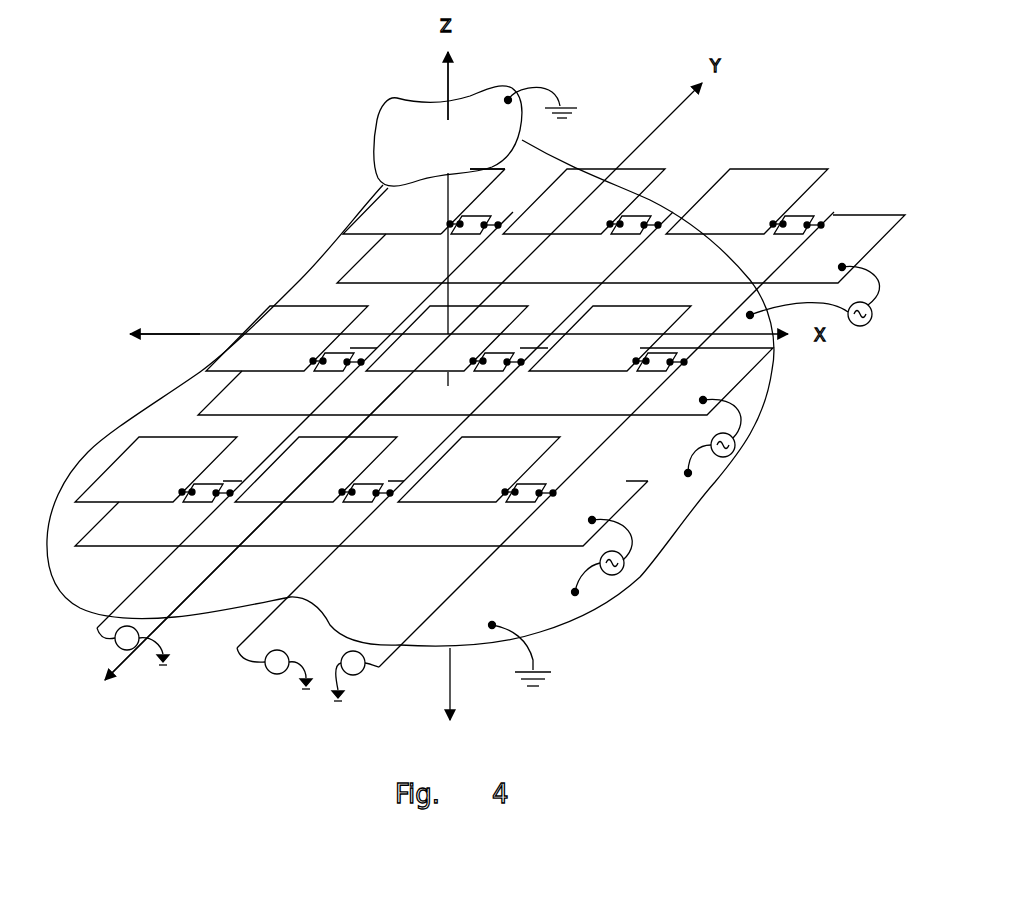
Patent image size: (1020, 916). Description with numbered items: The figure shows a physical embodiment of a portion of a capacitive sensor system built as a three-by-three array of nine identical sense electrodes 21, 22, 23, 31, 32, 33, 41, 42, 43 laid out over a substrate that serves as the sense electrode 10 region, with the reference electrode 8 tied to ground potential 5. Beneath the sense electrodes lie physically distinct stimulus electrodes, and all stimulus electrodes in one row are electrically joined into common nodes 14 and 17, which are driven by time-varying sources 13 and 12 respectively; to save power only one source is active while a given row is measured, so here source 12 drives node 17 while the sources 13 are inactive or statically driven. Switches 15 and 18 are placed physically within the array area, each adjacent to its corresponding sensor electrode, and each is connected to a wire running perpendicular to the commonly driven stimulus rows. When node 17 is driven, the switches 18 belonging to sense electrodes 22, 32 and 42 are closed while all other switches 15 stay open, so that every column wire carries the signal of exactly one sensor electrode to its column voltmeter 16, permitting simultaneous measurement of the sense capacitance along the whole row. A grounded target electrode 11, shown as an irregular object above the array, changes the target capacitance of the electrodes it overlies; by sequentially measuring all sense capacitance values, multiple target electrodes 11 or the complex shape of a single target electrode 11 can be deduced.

The ground potential 5 is at (541, 655).
The reference electrode 8 is at (648, 580).
The sense electrode 10 is at (256, 311).
The target electrode 11 is at (394, 97).
The source 12 is at (728, 461).
The sources 13 is at (870, 327).
The common node 14 is at (347, 267).
The switches 15 is at (810, 210).
The voltmeters 16 is at (114, 645).
The common node 17 is at (196, 416).
The switches 18 is at (639, 372).
The sense electrode 21 is at (156, 469).
The sense electrode 22 is at (287, 338).
The sense electrode 23 is at (424, 201).
The sense electrode 31 is at (316, 469).
The sense electrode 32 is at (447, 338).
The sense electrode 33 is at (584, 201).
The sense electrode 41 is at (479, 469).
The sense electrode 42 is at (610, 338).
The sense electrode 43 is at (747, 201).